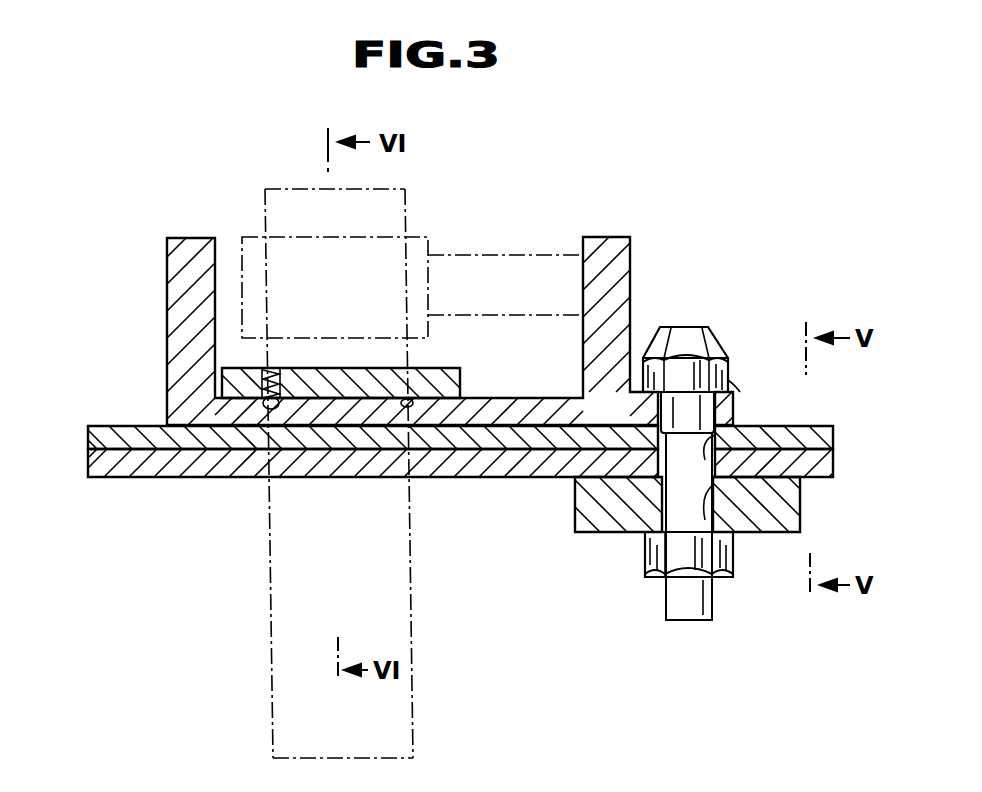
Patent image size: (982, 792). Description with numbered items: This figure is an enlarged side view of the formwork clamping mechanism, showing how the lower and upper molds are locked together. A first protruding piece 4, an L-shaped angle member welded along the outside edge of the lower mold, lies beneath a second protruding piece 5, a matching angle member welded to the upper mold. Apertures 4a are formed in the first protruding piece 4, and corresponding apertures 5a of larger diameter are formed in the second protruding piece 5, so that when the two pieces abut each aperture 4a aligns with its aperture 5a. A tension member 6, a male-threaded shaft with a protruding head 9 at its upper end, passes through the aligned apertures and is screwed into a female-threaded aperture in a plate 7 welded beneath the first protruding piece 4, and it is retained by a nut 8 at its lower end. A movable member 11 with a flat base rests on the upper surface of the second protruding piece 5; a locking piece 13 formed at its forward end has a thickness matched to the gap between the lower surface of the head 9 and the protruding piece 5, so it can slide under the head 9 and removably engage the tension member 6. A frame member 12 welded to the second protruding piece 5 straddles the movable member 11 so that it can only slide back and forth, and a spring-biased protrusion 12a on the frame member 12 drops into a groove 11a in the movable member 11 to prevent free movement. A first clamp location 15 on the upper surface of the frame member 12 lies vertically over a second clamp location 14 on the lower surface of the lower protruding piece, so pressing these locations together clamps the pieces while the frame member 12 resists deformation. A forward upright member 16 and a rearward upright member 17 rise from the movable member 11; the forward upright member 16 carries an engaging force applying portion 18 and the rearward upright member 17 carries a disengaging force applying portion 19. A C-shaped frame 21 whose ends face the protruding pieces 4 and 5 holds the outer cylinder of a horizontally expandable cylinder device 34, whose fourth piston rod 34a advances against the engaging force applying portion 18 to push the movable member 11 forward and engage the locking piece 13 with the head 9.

The first protruding piece 4 is at (120, 482).
The aperture 4a is at (716, 500).
The second protruding piece 5 is at (120, 437).
The aperture 5a is at (738, 412).
The tension member 6 is at (700, 618).
The plate 7 is at (578, 535).
The lower nut 8 is at (645, 568).
The head 9 is at (681, 335).
The movable member 11 is at (523, 403).
The groove 11a is at (278, 412).
The frame member 12 is at (460, 372).
The protrusion 12a is at (263, 407).
The locking piece 13 is at (737, 385).
The second clamp location 14 is at (340, 477).
The first clamp location 15 is at (305, 367).
The forward upright member 16 is at (620, 243).
The rearward upright member 17 is at (190, 248).
The engaging force applying portion 18 is at (582, 292).
The disengaging force applying portion 19 is at (218, 286).
The C-shaped frame 21 is at (273, 645).
The cylinder device 34 is at (418, 233).
The fourth piston rod 34a is at (498, 255).